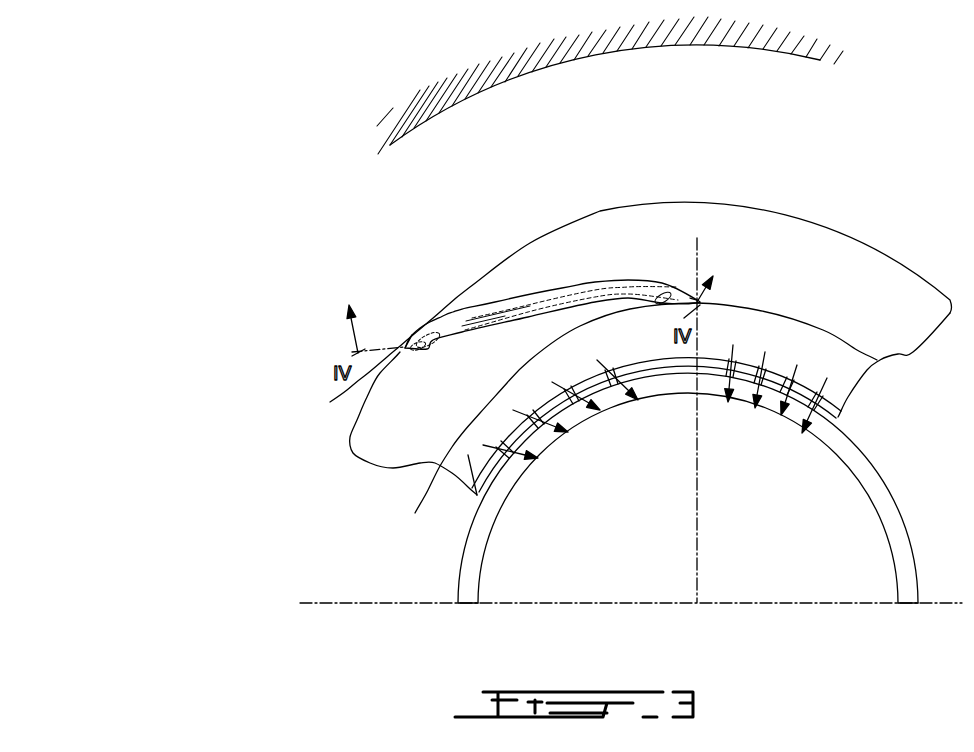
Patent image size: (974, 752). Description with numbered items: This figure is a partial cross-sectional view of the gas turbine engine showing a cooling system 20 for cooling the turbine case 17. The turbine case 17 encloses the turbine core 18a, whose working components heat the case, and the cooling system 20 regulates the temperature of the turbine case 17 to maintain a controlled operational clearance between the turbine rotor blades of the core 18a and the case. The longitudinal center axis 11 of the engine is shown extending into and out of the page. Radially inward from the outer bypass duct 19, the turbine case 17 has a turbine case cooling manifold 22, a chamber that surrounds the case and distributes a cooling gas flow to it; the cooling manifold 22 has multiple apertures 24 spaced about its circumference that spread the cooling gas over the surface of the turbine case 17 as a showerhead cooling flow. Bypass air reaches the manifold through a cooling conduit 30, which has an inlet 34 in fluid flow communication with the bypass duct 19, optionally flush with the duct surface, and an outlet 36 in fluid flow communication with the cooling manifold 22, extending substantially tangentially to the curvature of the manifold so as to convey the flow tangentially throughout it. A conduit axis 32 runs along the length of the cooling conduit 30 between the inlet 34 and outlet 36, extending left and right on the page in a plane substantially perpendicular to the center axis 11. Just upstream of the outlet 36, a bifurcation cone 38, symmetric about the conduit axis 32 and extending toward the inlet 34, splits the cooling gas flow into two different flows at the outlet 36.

The longitudinal center axis 11 is at (697, 603).
The turbine case 17 is at (462, 560).
The turbine core 18a is at (594, 494).
The bypass duct 19 is at (400, 201).
The cooling system 20 is at (312, 222).
The turbine case cooling manifold 22 is at (416, 513).
The apertures 24 is at (735, 403).
The cooling conduit 30 is at (494, 290).
The conduit axis 32 is at (497, 286).
The inlet 34 is at (396, 357).
The outlet 36 is at (692, 297).
The bifurcation cone 38 is at (667, 295).